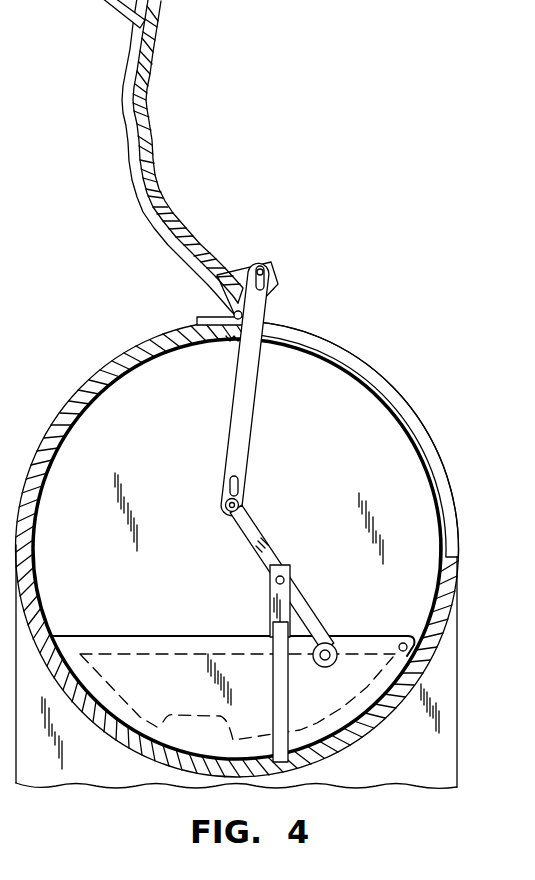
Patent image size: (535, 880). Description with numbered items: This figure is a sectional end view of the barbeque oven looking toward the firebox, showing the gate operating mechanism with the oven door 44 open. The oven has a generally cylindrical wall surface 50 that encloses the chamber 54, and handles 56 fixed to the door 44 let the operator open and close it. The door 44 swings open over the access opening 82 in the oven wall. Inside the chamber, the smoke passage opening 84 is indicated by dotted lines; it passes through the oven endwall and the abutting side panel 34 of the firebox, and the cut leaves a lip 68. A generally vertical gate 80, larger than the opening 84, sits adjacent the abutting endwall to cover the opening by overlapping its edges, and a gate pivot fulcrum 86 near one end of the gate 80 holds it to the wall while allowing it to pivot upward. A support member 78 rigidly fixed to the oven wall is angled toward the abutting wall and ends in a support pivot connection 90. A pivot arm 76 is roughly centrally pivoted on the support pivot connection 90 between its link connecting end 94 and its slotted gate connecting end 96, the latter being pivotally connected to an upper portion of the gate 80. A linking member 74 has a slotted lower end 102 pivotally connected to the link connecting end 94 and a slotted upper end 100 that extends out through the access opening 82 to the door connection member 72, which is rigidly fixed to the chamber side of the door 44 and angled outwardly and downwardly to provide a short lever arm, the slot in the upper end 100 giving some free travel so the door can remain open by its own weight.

The abutting side panel 34 is at (448, 713).
The oven door 44 is at (122, 118).
The cylindrical wall surface 50 is at (96, 372).
The chamber 54 is at (148, 432).
The handles 56 is at (120, 18).
The lip 68 is at (237, 697).
The door connection member 72 is at (242, 272).
The linking member 74 is at (258, 414).
The pivot arm 76 is at (272, 534).
The support member 78 is at (273, 694).
The gate 80 is at (160, 634).
The access opening 82 is at (383, 377).
The smoke passage opening 84 is at (137, 690).
The gate pivot fulcrum 86 is at (403, 641).
The support pivot connection 90 is at (284, 578).
The link connecting end 94 is at (240, 503).
The gate connecting end 96 is at (332, 638).
The upper end 100 is at (276, 290).
The lower end 102 is at (224, 478).